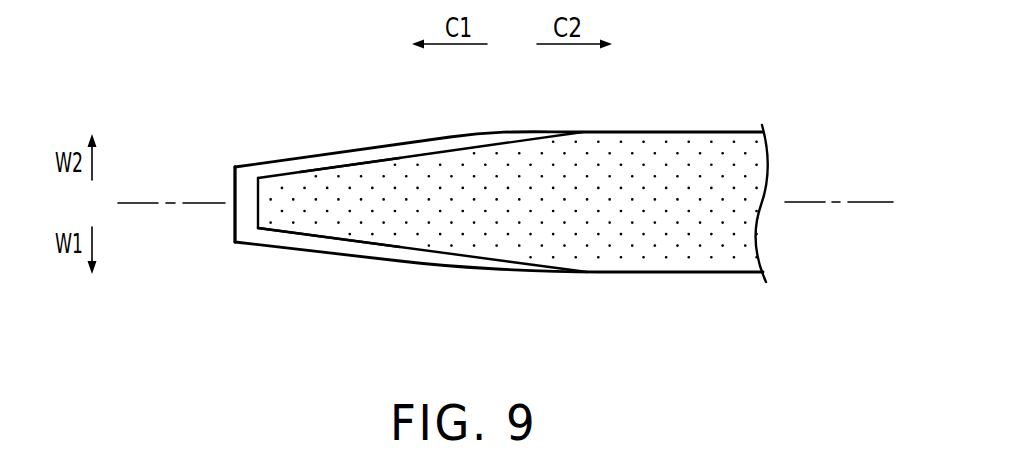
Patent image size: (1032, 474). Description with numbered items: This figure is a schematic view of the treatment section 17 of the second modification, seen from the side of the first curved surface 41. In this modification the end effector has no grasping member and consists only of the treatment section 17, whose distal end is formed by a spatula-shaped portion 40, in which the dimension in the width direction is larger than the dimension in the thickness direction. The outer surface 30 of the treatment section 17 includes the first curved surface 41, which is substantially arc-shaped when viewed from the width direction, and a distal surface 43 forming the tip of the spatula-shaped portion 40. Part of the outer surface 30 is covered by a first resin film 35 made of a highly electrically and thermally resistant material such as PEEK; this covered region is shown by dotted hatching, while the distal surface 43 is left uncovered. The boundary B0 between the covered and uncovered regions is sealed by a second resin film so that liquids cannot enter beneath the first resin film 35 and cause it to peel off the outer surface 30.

The treatment section 17 is at (486, 179).
The outer surface 30 is at (405, 303).
The first resin film 35 is at (670, 290).
The spatula-shaped portion 40 is at (430, 172).
The first curved surface 41 is at (323, 278).
The distal surface 43 is at (235, 184).
The boundary B0 is at (350, 135).